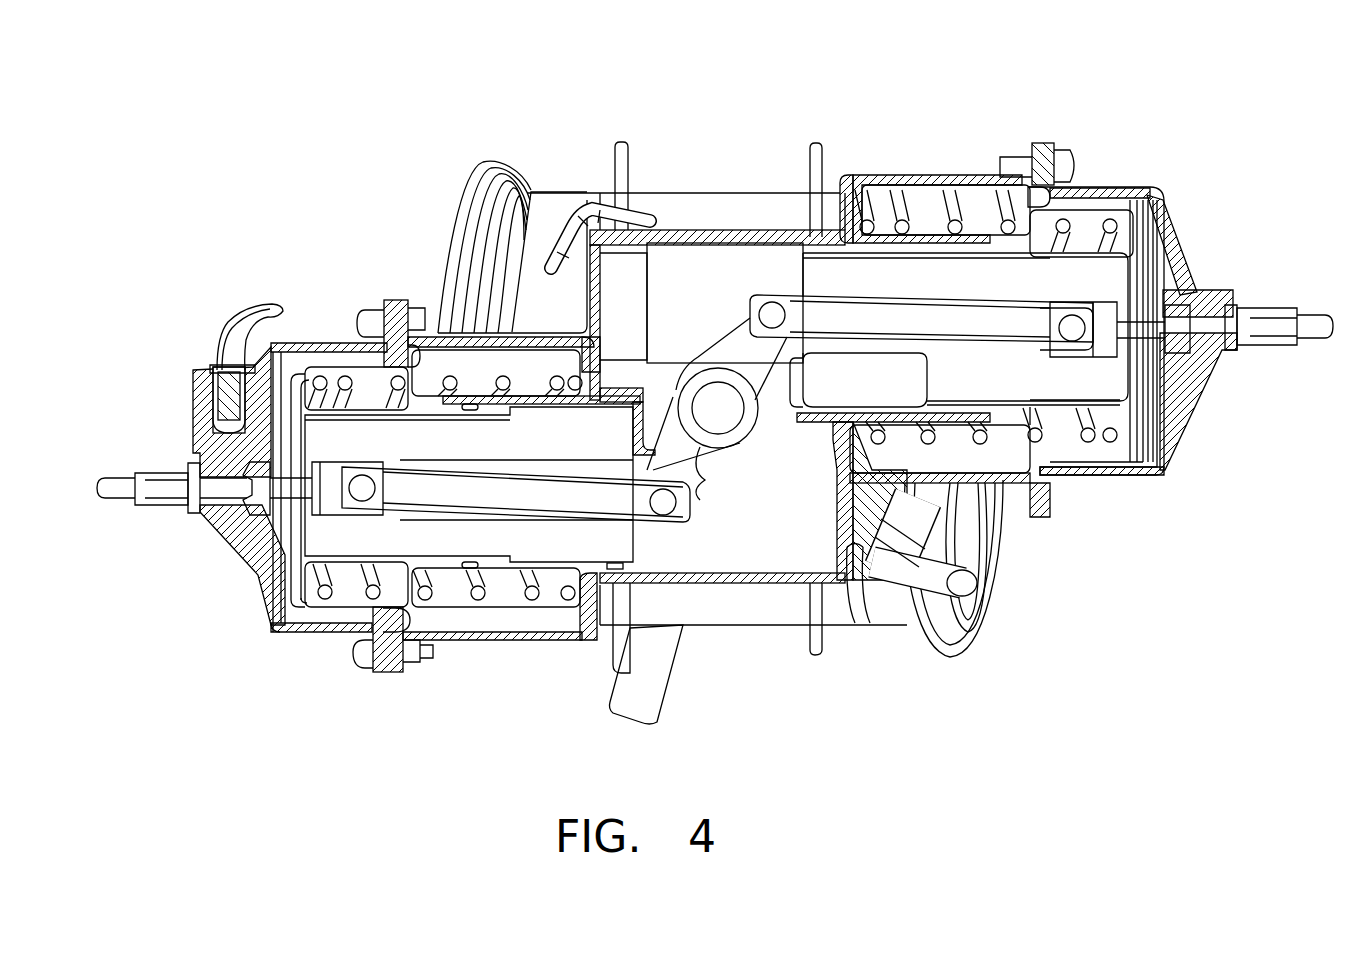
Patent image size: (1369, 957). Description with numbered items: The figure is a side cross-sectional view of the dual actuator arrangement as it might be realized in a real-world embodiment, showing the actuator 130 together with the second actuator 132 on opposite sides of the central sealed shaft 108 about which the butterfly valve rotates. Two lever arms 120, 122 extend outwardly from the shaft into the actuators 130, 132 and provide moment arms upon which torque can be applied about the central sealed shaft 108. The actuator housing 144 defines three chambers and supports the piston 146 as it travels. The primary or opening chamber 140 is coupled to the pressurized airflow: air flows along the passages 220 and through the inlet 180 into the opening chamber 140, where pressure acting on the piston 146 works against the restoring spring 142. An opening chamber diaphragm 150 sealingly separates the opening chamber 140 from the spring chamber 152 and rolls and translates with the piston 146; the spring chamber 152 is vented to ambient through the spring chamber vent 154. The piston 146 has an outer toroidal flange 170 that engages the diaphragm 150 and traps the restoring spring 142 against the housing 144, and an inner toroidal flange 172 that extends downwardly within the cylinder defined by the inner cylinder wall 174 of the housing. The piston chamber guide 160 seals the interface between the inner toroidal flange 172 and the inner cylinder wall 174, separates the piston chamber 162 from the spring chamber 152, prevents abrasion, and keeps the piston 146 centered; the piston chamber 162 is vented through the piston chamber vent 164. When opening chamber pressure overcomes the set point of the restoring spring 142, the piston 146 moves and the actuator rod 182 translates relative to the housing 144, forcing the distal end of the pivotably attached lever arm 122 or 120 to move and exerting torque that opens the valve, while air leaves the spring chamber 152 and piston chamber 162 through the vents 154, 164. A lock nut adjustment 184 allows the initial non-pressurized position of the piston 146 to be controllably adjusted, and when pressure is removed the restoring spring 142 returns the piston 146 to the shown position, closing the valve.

The central sealed shaft 108 is at (698, 445).
The lever arm 120 is at (695, 463).
The lever arm 122 is at (745, 352).
The actuator 130 is at (1125, 574).
The actuator 132 is at (347, 697).
The opening chamber 140 is at (352, 360).
The restoring spring 142 is at (1090, 470).
The actuator housing 144 is at (530, 645).
The piston 146 is at (1087, 230).
The opening chamber diaphragm 150 is at (1018, 195).
The spring chamber 152 is at (893, 197).
The spring chamber vent 154 is at (875, 175).
The piston chamber guide 160 is at (470, 565).
The piston chamber 162 is at (685, 560).
The piston chamber vent 164 is at (720, 585).
The outer toroidal flange 170 is at (1160, 192).
The inner toroidal flange 172 is at (552, 550).
The inner cylinder wall 174 is at (945, 425).
The inlet 180 is at (228, 447).
The actuator rod 182 is at (797, 312).
The lock nut adjustment 184 is at (1177, 305).
The passages 220 is at (230, 335).